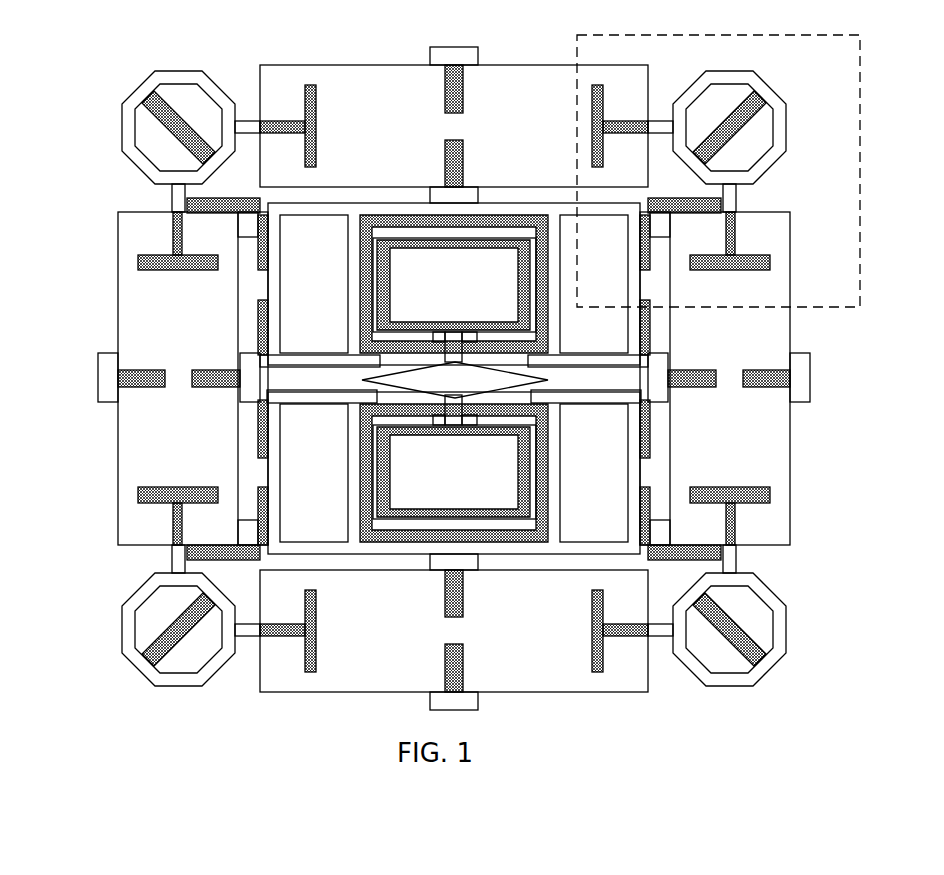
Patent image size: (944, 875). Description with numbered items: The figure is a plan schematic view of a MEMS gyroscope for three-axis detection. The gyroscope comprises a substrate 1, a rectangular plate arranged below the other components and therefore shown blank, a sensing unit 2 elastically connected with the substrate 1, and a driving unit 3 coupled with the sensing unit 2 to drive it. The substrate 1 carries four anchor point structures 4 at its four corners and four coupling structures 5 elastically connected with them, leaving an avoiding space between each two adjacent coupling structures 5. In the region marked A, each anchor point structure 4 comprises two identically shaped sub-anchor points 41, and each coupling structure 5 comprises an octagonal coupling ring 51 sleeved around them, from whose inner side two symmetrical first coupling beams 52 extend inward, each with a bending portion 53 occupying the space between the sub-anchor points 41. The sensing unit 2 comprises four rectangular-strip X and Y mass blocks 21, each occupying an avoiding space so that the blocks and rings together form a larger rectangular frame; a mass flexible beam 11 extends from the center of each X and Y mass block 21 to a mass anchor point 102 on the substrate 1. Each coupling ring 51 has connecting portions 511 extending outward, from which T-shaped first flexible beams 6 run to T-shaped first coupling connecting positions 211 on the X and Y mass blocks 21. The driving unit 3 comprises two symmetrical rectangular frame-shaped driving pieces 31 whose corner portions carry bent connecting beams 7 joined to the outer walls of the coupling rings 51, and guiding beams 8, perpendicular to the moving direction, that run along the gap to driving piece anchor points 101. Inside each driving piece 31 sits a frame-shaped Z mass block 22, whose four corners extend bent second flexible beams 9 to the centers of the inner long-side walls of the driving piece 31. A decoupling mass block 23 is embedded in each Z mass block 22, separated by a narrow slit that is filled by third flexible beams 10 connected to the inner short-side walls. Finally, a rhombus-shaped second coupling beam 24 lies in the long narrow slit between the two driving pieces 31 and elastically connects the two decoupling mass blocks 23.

The substrate 1 is at (252, 223).
The sensing unit 2 is at (118, 212).
The driving unit 3 is at (275, 397).
The anchor point structure 4 is at (147, 622).
The coupling structure 5 is at (130, 635).
The first flexible beam 6 is at (733, 235).
The connecting beam 7 is at (170, 533).
The guiding beam 8 is at (260, 447).
The second flexible beam 9 is at (365, 225).
The third flexible beam 10 is at (535, 452).
The mass flexible beam 11 is at (118, 372).
The X and Y mass block 21 is at (743, 323).
The Z mass block 22 is at (540, 510).
The decoupling mass block 23 is at (607, 307).
The second coupling beam 24 is at (370, 363).
The driving piece 31 is at (690, 197).
The sub-anchor point 41 is at (745, 127).
The coupling ring 51 is at (767, 595).
The first coupling beam 52 is at (760, 648).
The bending portion 53 is at (730, 618).
The driving piece anchor point 101 is at (250, 533).
The mass anchor point 102 is at (797, 365).
The first coupling connecting position 211 is at (745, 513).
The connecting portion 511 is at (732, 568).
The portion A is at (718, 157).